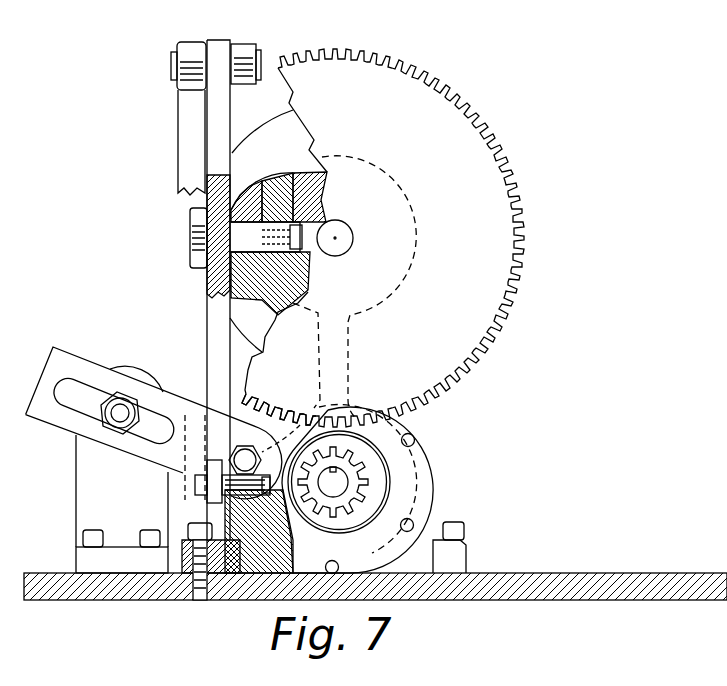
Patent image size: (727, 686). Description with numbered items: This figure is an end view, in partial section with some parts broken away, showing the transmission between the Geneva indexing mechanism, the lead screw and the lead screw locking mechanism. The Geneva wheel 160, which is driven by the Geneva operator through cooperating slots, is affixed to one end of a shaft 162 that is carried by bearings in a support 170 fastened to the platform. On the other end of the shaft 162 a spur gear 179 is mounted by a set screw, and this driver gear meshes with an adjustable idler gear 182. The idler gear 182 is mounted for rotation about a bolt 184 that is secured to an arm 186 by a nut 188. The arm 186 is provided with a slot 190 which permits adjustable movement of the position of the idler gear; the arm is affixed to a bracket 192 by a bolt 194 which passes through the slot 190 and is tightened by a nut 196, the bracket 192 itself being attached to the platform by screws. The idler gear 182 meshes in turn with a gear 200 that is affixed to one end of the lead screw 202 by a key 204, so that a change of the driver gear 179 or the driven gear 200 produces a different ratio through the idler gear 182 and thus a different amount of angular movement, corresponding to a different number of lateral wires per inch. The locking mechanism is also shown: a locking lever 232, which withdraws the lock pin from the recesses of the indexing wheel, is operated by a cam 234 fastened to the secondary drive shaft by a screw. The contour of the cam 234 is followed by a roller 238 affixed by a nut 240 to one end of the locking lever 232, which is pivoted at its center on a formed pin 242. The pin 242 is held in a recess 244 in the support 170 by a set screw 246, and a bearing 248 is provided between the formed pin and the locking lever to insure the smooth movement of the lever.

The Geneva wheel 160 is at (269, 124).
The shaft 162 is at (342, 241).
The support 170 is at (374, 488).
The spur gear 179 is at (383, 238).
The adjustable idler gear 182 is at (279, 413).
The bolt 184 is at (245, 452).
The arm 186 is at (172, 397).
The nut 188 is at (282, 438).
The slot 190 is at (110, 410).
The bracket 192 is at (122, 469).
The bolt 194 is at (120, 404).
The nut 196 is at (130, 428).
The gear 200 is at (331, 458).
The lead screw 202 is at (333, 482).
The key 204 is at (336, 469).
The locking lever 232 is at (207, 313).
The cam 234 is at (178, 111).
The roller 238 is at (193, 46).
The nut 240 is at (247, 52).
The formed pin 242 is at (190, 245).
The recess 244 is at (320, 226).
The set screw 246 is at (279, 198).
The bearing 248 is at (262, 181).